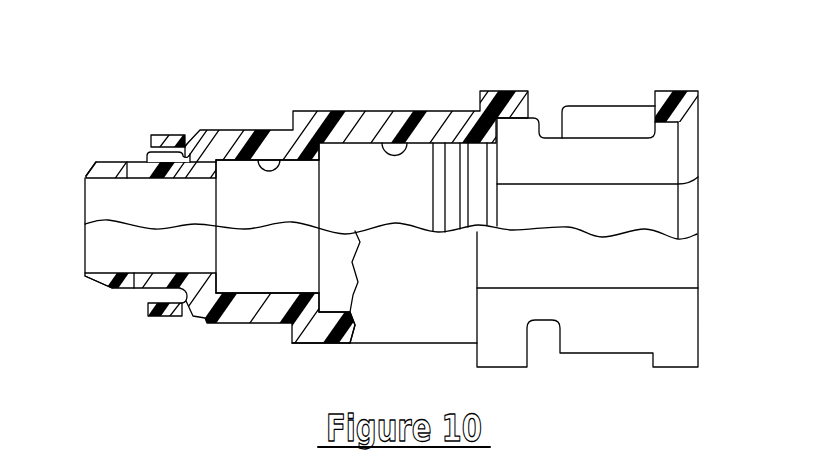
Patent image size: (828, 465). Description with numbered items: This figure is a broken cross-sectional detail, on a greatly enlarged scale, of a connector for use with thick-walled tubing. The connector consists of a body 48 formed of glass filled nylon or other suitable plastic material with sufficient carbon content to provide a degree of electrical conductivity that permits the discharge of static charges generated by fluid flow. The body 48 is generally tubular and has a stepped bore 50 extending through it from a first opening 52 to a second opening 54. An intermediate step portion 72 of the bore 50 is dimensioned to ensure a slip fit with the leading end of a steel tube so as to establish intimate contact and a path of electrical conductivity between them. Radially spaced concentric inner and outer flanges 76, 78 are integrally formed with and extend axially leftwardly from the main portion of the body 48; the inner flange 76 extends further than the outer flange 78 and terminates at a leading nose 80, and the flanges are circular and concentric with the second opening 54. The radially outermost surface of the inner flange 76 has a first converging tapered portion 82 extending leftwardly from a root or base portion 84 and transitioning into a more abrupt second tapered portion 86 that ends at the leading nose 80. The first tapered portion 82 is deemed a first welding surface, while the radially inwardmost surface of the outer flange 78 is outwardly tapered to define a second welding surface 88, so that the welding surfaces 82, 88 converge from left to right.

The body 48 is at (357, 103).
The stepped bore 50 is at (409, 142).
The first opening 52 is at (674, 124).
The second opening 54 is at (100, 180).
The intermediate step portion 72 is at (263, 152).
The inner flange 76 is at (135, 286).
The outer flange 78 is at (163, 320).
The leading nose 80 is at (85, 276).
The first tapered portion 82 is at (127, 160).
The root portion 84 is at (170, 135).
The second tapered portion 86 is at (102, 170).
The second welding surface 88 is at (147, 152).